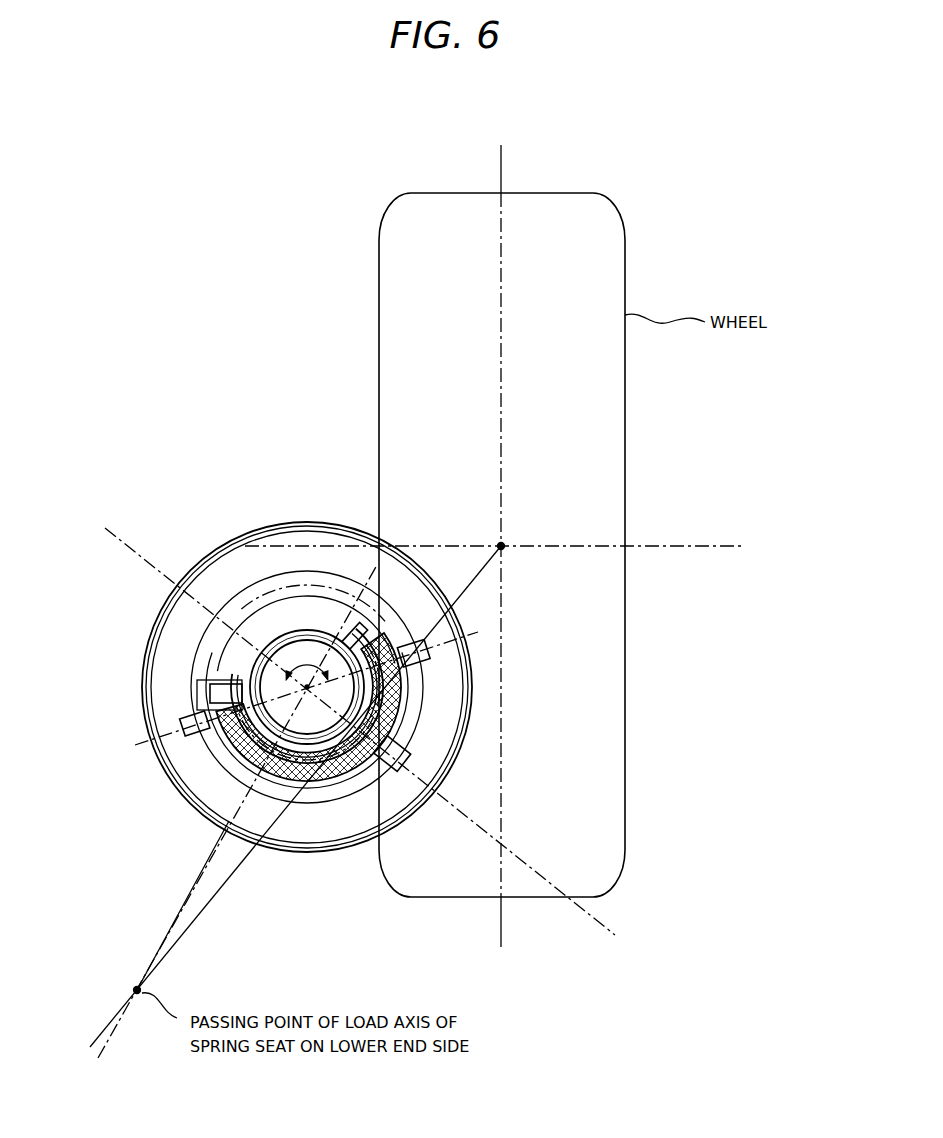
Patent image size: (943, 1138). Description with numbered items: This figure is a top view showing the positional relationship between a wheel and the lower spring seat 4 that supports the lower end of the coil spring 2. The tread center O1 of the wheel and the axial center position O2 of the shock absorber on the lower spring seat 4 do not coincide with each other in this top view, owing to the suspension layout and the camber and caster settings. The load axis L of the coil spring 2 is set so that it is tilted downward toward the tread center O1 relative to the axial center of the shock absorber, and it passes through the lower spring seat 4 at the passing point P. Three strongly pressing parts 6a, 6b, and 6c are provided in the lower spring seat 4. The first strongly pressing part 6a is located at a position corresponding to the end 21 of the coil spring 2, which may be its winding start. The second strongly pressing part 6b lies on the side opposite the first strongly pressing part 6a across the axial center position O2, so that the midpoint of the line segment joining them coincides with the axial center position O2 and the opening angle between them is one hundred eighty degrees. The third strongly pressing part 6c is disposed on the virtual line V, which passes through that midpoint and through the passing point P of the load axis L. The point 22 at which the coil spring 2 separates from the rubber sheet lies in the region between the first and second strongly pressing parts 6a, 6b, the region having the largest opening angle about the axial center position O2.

The coil spring 2 is at (170, 782).
The spring seat 4 is at (290, 495).
The first strongly pressing part 6a is at (177, 718).
The second strongly pressing part 6b is at (437, 657).
The third strongly pressing part 6c is at (398, 783).
The end of the coil spring 21 is at (198, 708).
The point of separation 22 is at (403, 618).
The passing point P is at (352, 727).
The load axis L is at (180, 938).
The virtual line V is at (127, 543).
The tread center O1 is at (521, 531).
The axial center position O2 is at (307, 687).